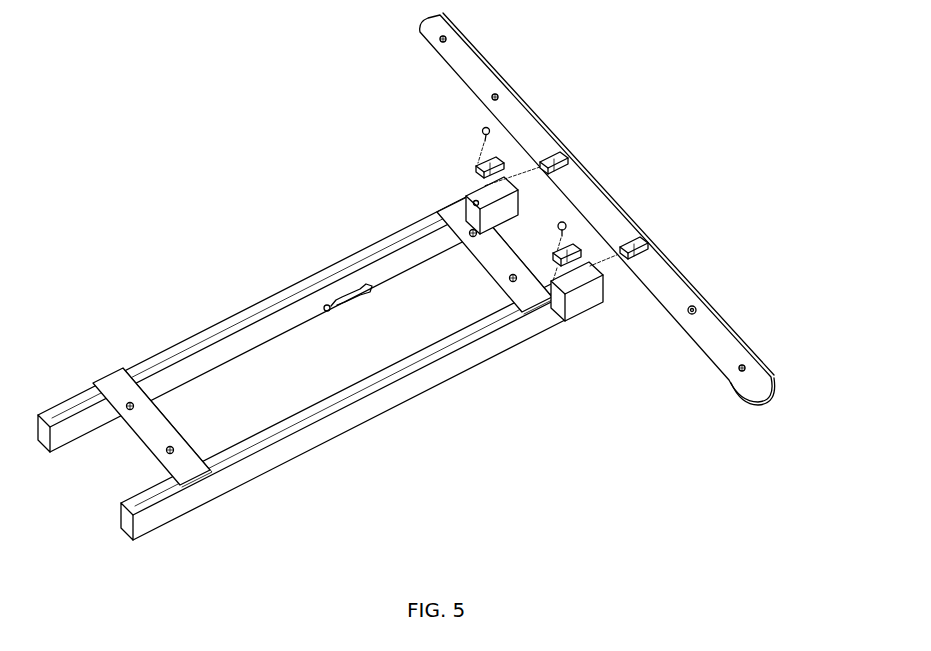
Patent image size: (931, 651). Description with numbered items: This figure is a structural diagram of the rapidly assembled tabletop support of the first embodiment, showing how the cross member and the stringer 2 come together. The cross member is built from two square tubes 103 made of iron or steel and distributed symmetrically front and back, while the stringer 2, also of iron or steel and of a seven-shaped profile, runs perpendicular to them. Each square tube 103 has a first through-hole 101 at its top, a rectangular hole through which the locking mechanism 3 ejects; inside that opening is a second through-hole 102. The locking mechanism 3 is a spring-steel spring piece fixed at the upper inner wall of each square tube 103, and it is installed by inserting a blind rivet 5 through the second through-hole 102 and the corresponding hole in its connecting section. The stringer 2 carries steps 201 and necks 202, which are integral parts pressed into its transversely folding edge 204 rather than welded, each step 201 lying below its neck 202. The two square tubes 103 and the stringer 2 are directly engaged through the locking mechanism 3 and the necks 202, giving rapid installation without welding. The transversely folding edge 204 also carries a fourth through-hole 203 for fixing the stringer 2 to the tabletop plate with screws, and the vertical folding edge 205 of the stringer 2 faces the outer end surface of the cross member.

The stringer 2 is at (529, 117).
The step 201 is at (575, 151).
The neck 202 is at (629, 227).
The fourth through-hole 203 is at (699, 300).
The transversely folding edge 204 is at (736, 340).
The vertical folding edge 205 is at (779, 381).
The locking mechanism 3 is at (466, 162).
The blind rivet 5 is at (108, 375).
The first through-hole 101 is at (583, 295).
The second through-hole 102 is at (555, 298).
The square tube 103 is at (188, 330).